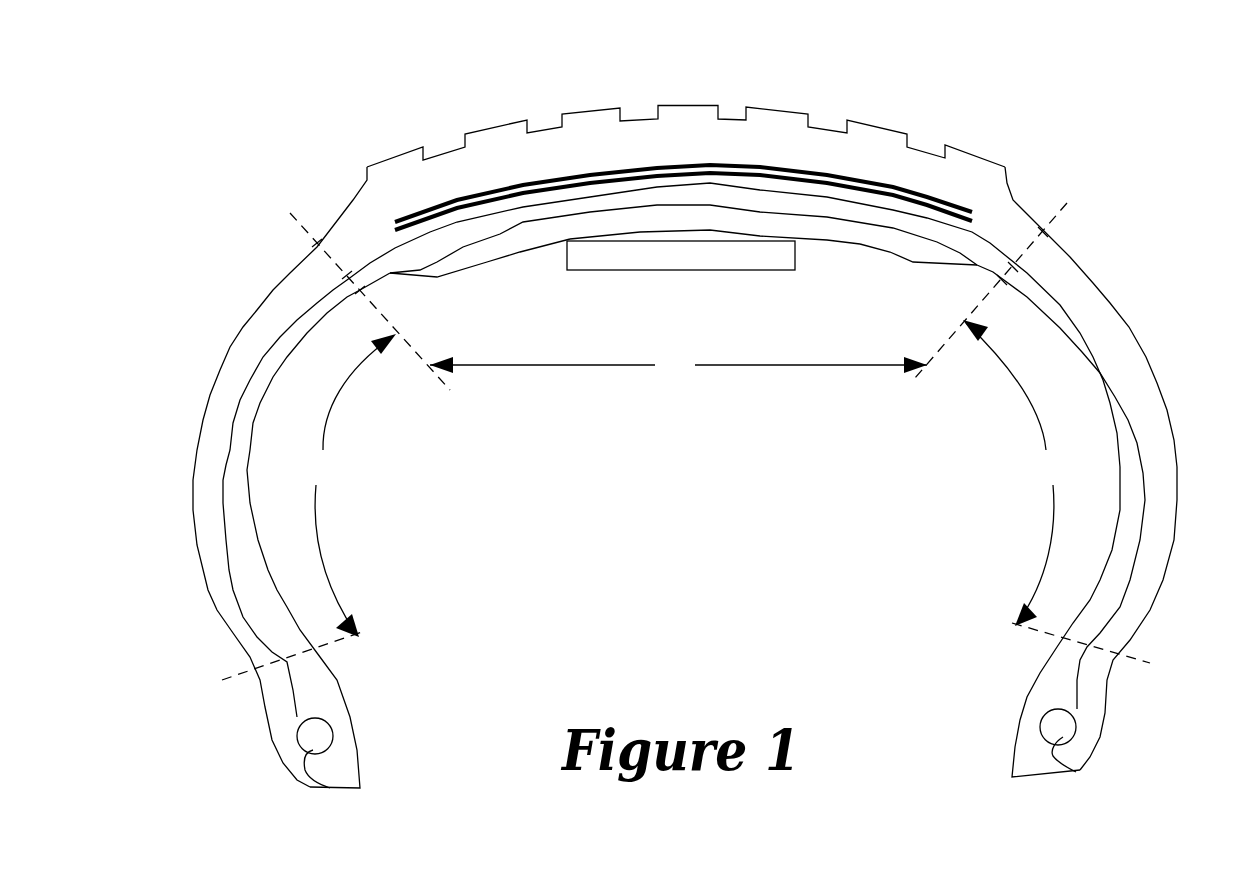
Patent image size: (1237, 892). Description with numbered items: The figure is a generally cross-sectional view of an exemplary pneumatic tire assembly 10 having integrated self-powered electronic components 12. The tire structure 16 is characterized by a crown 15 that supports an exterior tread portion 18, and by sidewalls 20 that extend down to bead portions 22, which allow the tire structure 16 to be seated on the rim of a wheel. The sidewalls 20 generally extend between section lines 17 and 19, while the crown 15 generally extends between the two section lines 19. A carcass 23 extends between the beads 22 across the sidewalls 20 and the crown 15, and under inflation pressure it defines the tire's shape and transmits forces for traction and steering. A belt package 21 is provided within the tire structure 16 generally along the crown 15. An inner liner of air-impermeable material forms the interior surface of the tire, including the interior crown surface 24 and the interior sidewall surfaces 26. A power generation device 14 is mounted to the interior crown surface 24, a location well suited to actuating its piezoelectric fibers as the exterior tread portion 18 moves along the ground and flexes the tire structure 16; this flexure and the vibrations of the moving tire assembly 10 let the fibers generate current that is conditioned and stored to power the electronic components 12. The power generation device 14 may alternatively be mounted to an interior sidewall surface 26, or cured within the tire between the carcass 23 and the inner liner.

The pneumatic tire assembly 10 is at (1080, 135).
The electronic components 12 is at (660, 271).
The power generation device 14 is at (497, 245).
The crown 15 is at (678, 365).
The tire structure 16 is at (1110, 312).
The section line 17 is at (685, 659).
The exterior tread portion 18 is at (535, 132).
The section line 19 is at (682, 284).
The sidewalls 20 is at (684, 478).
The belt package 21 is at (687, 166).
The bead portions 22 is at (330, 788).
The carcass 23 is at (252, 390).
The interior crown surface 24 is at (877, 238).
The interior sidewall surfaces 26 is at (250, 540).